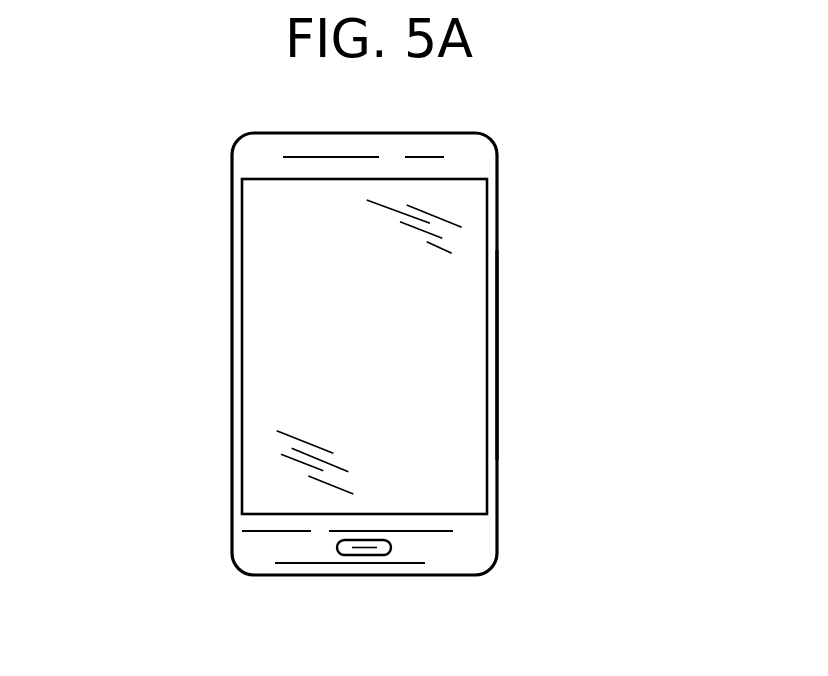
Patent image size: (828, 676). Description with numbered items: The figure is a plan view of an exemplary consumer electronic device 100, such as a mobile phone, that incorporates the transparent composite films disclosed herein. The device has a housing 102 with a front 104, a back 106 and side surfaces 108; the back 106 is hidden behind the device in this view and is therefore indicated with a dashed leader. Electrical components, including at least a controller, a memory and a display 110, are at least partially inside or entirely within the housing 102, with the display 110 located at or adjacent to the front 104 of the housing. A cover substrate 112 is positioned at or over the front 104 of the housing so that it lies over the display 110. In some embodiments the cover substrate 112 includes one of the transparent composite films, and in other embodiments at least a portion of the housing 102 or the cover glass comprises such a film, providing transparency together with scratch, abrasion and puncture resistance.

The consumer electronic device 100 is at (527, 178).
The housing 102 is at (253, 156).
The front surface 104 is at (472, 543).
The back surface 106 is at (273, 293).
The side surfaces 108 is at (498, 388).
The display 110 is at (439, 298).
The cover substrate 112 is at (282, 420).